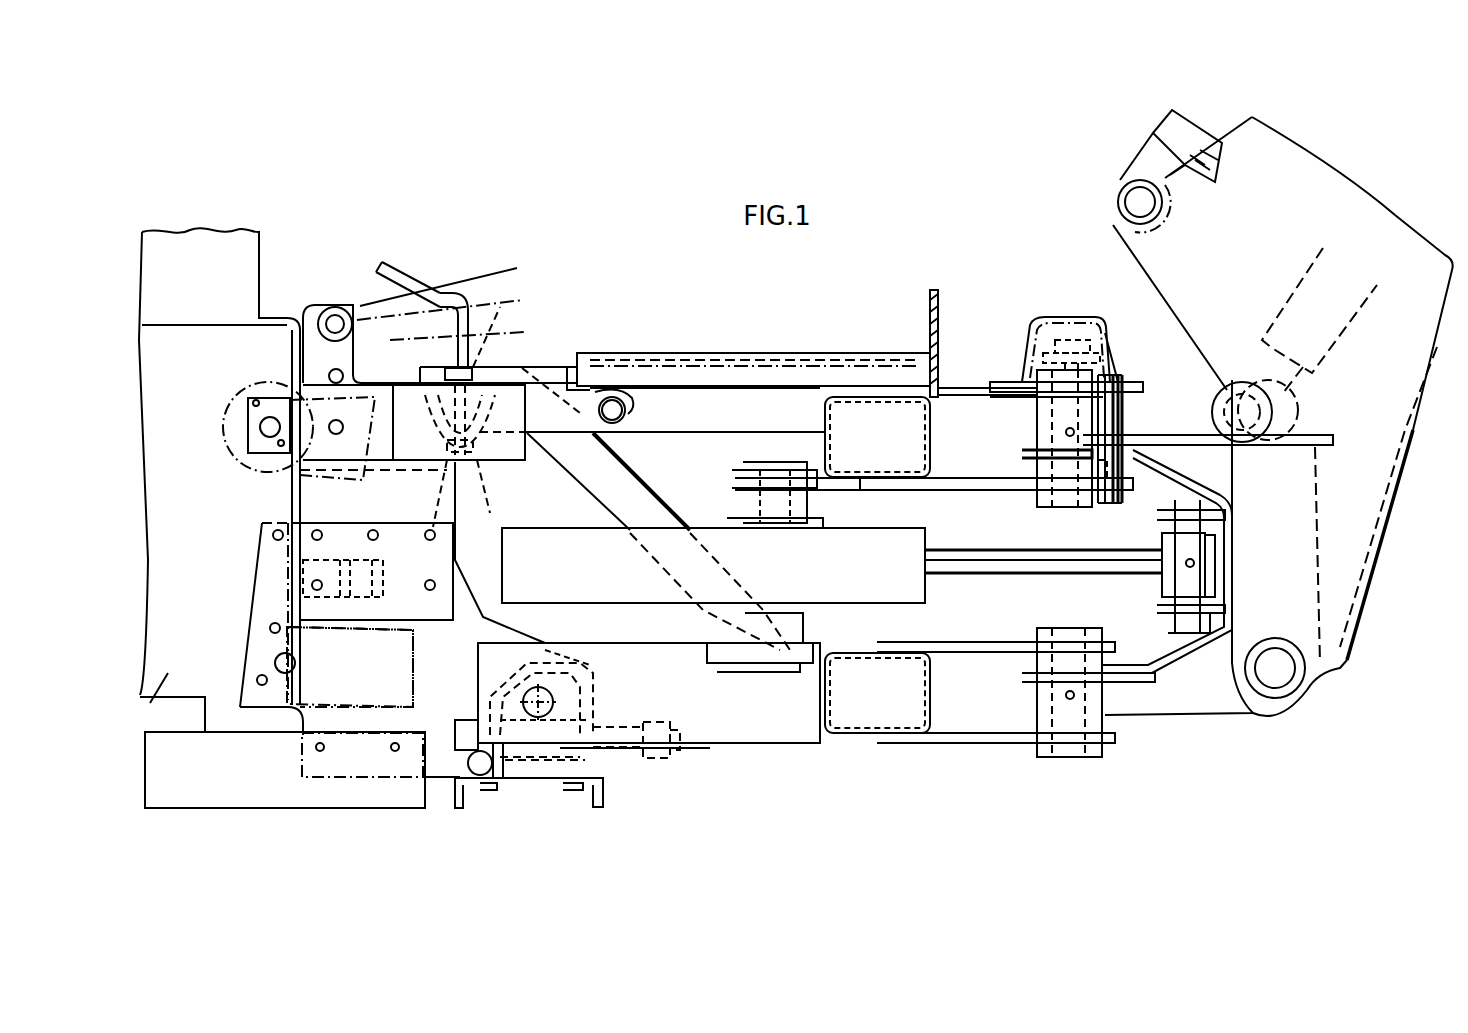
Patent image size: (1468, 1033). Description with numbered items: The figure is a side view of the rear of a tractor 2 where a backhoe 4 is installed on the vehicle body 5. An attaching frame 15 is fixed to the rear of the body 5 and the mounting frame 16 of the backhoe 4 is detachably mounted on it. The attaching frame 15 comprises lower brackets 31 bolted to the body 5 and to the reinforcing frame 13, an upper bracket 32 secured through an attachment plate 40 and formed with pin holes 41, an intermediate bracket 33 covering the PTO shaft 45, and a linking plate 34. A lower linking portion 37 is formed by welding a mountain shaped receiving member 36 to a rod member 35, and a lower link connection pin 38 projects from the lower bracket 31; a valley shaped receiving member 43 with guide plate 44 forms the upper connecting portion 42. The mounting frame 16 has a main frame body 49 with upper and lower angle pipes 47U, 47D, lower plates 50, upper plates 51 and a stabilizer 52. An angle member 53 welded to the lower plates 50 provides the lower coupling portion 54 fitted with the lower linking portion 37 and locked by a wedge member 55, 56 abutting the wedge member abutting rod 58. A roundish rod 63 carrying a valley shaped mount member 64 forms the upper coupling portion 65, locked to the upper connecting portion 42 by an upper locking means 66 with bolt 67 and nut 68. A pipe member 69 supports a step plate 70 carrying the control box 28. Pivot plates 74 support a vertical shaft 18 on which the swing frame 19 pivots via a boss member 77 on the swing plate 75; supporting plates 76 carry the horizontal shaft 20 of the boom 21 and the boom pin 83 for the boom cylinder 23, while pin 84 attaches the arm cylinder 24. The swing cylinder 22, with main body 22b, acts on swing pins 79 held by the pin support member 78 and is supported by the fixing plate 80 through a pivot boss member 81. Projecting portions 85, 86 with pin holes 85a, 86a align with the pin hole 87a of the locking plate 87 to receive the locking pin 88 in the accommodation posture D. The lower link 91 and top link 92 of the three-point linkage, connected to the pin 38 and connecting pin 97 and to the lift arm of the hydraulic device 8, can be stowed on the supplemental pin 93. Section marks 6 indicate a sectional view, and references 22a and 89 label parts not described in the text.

The tractor 2 is at (292, 206).
The backhoe 4 is at (940, 259).
The vehicle body 5 is at (166, 702).
The section line 6 is at (396, 497).
The hydraulic device 8 is at (228, 240).
The reinforcing frame 13 is at (218, 795).
The attaching frame 15 is at (360, 800).
The mounting frame 16 is at (611, 325).
The vertical shaft 18 is at (1060, 520).
The swing frame 19 is at (1160, 760).
The horizontal shaft 20 is at (1285, 672).
The boom 21 is at (1385, 505).
The swing cylinder 22 is at (925, 603).
The actuator rod 22a is at (1136, 580).
The main body 22b is at (940, 583).
The boom cylinder 23 is at (1340, 332).
The arm cylinder 24 is at (1162, 125).
The control box 28 is at (951, 334).
The lower bracket 31 is at (437, 790).
The upper bracket 32 is at (305, 333).
The intermediate bracket 33 is at (310, 500).
The linking plate 34 is at (592, 795).
The rod member 35 is at (566, 698).
The mountain shaped receiving member 36 is at (588, 661).
The lower linking portion 37 is at (635, 655).
The lower link connection pin 38 is at (283, 663).
The attachment plate 40 is at (283, 313).
The pin hole 41 is at (329, 427).
The upper connecting portion 42 is at (485, 440).
The valley shaped receiving member 43 is at (481, 449).
The guide plate 44 is at (507, 454).
The PTO shaft 45 is at (300, 577).
The upper angle pipe 47U is at (930, 438).
The lower angle pipe 47D is at (930, 700).
The main frame body 49 is at (848, 743).
The lower plate 50 is at (782, 743).
The upper plate 51 is at (690, 415).
The stabilizer 52 is at (603, 477).
The angle member 53 is at (520, 680).
The lower coupling portion 54 is at (542, 665).
The wedge member 55 is at (660, 760).
The wedge member 56 is at (455, 720).
The wedge member abutting rod 58 is at (480, 767).
The roundish rod 63 is at (526, 355).
The valley shaped mount member 64 is at (485, 427).
The upper coupling portion 65 is at (538, 305).
The upper locking means 66 is at (460, 300).
The bolt 67 is at (395, 272).
The nut 68 is at (500, 552).
The pipe member 69 is at (620, 395).
The step plate 70 is at (810, 353).
The pivot plate 74 is at (925, 460).
The swing plate 75 is at (1175, 680).
The supporting plate 76 is at (1225, 680).
The boss member 77 is at (1037, 436).
The pin support member 78 is at (1215, 600).
The swing pin 79 is at (800, 505).
The fixing plate 80 is at (862, 480).
The pivot boss member 81 is at (762, 462).
The boom pin 83 is at (1232, 393).
The pin 84 is at (1135, 205).
The projecting portion 85 is at (1120, 382).
The pin hole 85a is at (1093, 340).
The projecting portion 86 is at (1125, 462).
The pin hole 86a is at (1100, 507).
The locking plate 87 is at (1335, 430).
The pin hole 87a is at (1225, 410).
The locking pin 88 is at (1120, 505).
The hinge link 89 is at (1118, 296).
The lower link 91 is at (240, 425).
The top link 92 is at (494, 268).
The supplemental pin 93 is at (268, 428).
The connecting pin 97 is at (337, 323).
The accommodation posture D is at (1382, 600).